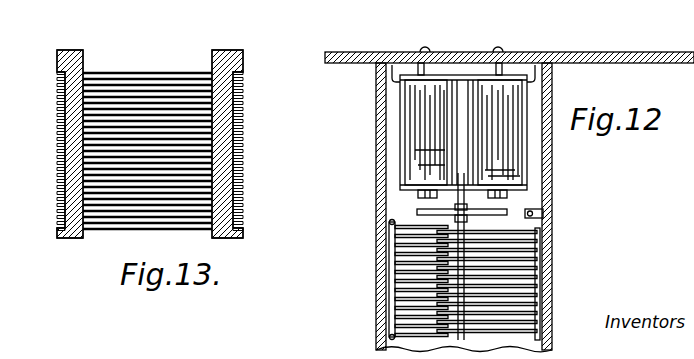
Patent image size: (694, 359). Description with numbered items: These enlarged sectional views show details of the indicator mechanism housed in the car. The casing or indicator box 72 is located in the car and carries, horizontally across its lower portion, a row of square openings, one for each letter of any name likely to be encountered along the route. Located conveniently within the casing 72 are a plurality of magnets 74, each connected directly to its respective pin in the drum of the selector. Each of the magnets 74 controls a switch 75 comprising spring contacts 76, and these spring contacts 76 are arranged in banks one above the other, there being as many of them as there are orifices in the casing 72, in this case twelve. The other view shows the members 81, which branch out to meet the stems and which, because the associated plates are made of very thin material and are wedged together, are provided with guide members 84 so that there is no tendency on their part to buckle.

In FIG. 12, the casing or indicator box 72 is at (383, 54).
In FIG. 12, the magnets 74 is at (423, 135).
In FIG. 12, the switch 75 is at (487, 280).
In FIG. 12, the spring contacts 76 is at (446, 281).
In FIG. 13, the members 81 is at (133, 108).
In FIG. 13, the guide members 84 is at (58, 184).